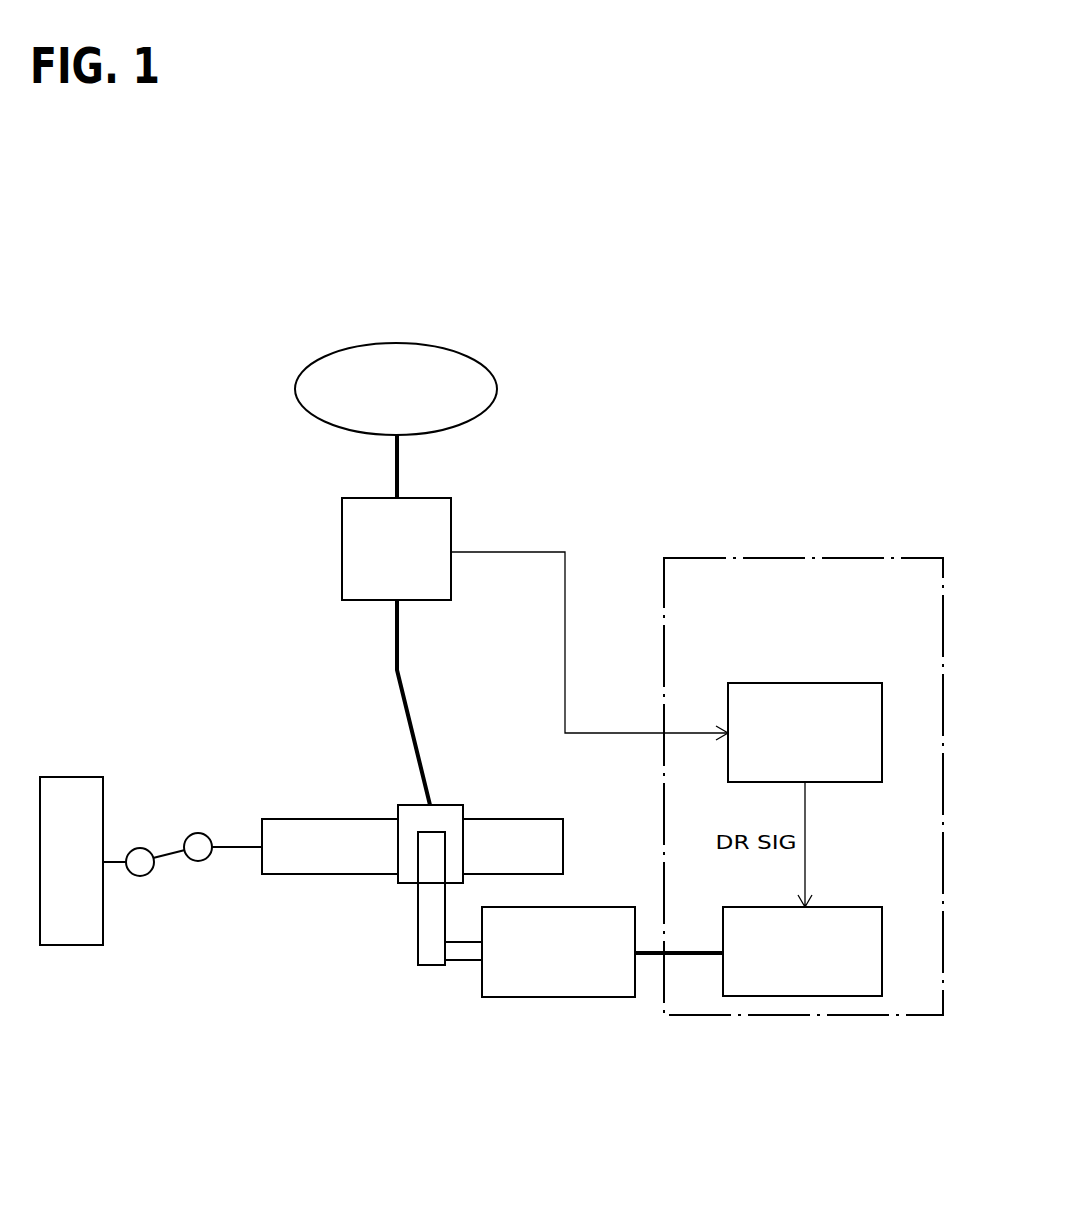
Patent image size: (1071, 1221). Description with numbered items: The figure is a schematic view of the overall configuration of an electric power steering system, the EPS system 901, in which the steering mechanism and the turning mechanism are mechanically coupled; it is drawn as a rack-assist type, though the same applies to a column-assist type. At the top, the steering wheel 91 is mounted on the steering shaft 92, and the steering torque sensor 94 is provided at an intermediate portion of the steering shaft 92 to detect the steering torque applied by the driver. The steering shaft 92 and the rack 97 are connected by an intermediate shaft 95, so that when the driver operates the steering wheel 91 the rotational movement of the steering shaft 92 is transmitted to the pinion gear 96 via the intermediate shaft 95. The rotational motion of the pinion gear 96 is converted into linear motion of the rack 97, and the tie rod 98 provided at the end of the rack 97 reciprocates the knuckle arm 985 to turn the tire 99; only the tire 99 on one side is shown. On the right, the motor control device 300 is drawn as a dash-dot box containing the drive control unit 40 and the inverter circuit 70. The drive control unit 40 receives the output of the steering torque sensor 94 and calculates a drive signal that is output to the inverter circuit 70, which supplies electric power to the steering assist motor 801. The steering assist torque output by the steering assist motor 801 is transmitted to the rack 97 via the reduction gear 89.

The EPS system 901 is at (736, 377).
The steering wheel 91 is at (391, 343).
The steering shaft 92 is at (395, 466).
The steering torque sensor 94 is at (342, 551).
The intermediate shaft 95 is at (395, 642).
The pinion gear 96 is at (413, 826).
The rack 97 is at (316, 874).
The reduction gear 89 is at (432, 946).
The tie rod 98 is at (229, 865).
The knuckle arm 985 is at (165, 846).
The tire 99 is at (66, 777).
The steering assist motor 801 is at (560, 997).
The motor control device 300 is at (778, 556).
The drive control unit 40 is at (848, 683).
The inverter circuit 70 is at (848, 907).